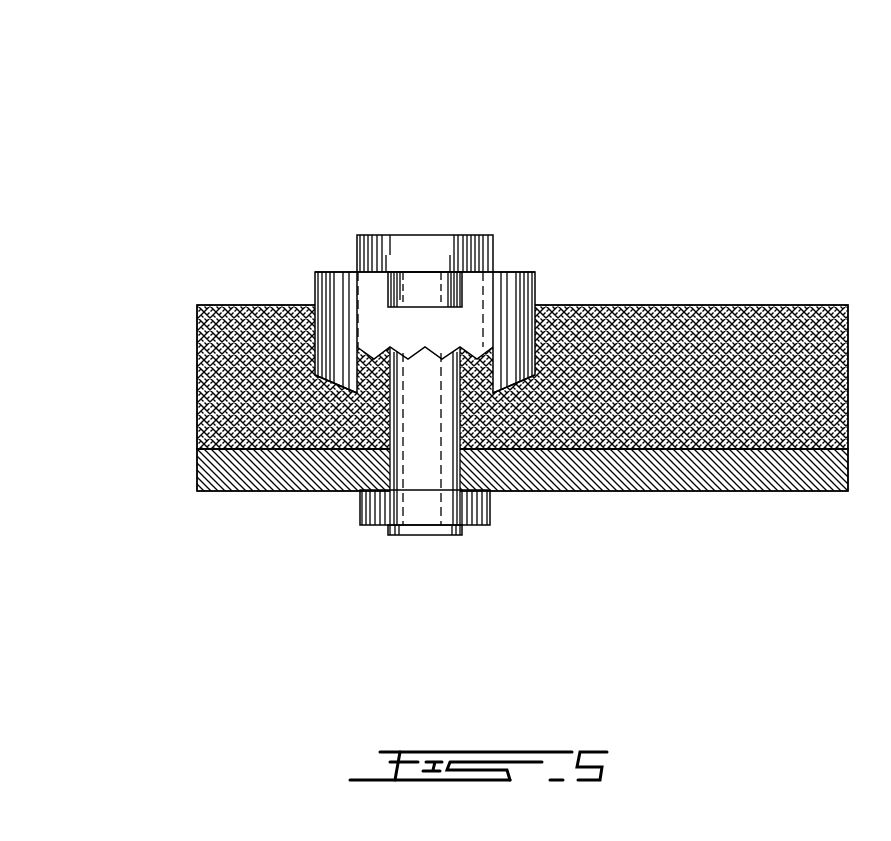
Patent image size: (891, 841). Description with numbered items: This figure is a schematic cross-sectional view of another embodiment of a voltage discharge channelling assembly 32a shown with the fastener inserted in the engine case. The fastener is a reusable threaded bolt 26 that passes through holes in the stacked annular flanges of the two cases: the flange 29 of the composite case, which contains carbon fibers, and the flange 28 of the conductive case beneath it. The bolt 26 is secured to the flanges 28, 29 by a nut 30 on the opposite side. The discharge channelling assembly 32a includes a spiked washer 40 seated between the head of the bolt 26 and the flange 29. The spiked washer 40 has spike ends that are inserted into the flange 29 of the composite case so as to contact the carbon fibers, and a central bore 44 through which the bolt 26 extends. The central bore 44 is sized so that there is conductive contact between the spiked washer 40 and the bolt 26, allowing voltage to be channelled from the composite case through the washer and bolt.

The discharge channelling assembly 32a is at (233, 213).
The bolt 26 is at (368, 212).
The spiked washer 40 is at (508, 260).
The central bore 44 is at (445, 292).
The flange of the composite case 29 is at (717, 305).
The flange of the conductive case 28 is at (737, 507).
The nut 30 is at (347, 530).